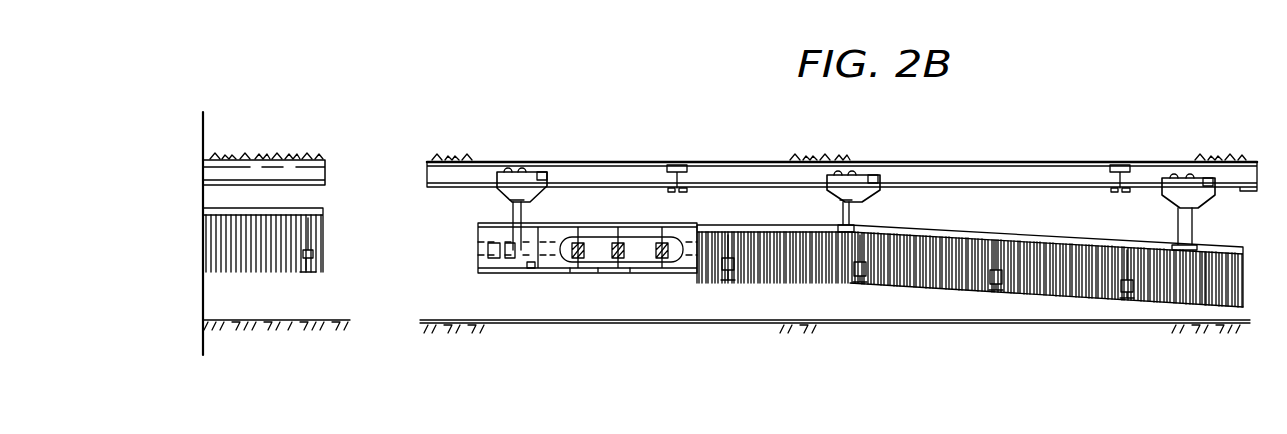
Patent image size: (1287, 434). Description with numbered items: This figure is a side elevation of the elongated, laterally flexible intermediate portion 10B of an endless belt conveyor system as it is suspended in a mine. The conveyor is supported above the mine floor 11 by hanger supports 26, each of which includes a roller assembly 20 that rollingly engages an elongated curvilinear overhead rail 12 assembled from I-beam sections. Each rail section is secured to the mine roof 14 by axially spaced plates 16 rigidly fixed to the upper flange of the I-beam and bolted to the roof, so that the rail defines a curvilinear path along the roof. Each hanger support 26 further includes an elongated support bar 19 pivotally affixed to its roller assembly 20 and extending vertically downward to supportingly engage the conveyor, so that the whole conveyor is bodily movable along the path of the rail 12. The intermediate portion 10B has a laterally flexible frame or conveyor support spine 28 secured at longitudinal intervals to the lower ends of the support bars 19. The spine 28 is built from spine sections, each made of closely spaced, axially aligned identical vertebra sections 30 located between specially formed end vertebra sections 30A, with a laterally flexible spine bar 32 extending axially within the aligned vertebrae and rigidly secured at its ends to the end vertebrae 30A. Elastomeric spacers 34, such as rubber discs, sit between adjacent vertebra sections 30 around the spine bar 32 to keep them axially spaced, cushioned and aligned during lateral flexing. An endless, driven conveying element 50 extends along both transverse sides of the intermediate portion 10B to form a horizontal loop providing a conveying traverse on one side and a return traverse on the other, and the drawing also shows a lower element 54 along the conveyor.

The intermediate portion 10B is at (920, 265).
The floor 11 is at (675, 353).
The overhead rail 12 is at (713, 178).
The mine roof 14 is at (928, 143).
The plates 16 is at (676, 165).
The support bar 19 is at (523, 208).
The roller assembly 20 is at (521, 178).
The hanger support 26 is at (515, 202).
The conveyor support spine 28 is at (488, 266).
The vertebra sections 30 is at (630, 270).
The end vertebra sections 30A is at (531, 268).
The spine bar 32 is at (640, 245).
The elastomeric spacers 34 is at (618, 243).
The conveying element 50 is at (1220, 281).
The lower fence rail 54 is at (1090, 291).